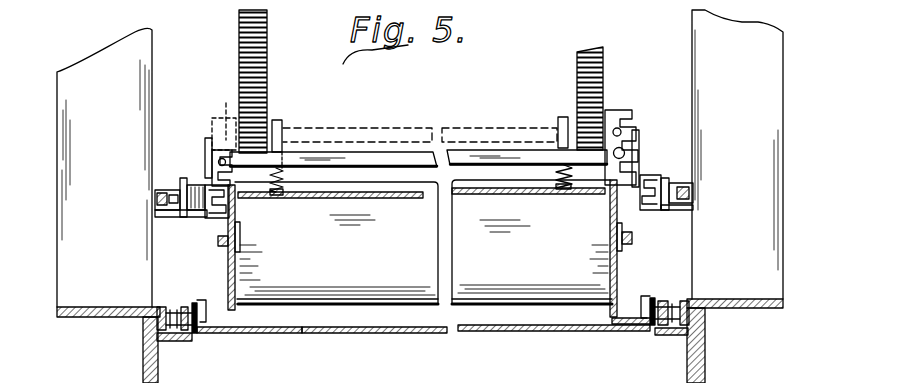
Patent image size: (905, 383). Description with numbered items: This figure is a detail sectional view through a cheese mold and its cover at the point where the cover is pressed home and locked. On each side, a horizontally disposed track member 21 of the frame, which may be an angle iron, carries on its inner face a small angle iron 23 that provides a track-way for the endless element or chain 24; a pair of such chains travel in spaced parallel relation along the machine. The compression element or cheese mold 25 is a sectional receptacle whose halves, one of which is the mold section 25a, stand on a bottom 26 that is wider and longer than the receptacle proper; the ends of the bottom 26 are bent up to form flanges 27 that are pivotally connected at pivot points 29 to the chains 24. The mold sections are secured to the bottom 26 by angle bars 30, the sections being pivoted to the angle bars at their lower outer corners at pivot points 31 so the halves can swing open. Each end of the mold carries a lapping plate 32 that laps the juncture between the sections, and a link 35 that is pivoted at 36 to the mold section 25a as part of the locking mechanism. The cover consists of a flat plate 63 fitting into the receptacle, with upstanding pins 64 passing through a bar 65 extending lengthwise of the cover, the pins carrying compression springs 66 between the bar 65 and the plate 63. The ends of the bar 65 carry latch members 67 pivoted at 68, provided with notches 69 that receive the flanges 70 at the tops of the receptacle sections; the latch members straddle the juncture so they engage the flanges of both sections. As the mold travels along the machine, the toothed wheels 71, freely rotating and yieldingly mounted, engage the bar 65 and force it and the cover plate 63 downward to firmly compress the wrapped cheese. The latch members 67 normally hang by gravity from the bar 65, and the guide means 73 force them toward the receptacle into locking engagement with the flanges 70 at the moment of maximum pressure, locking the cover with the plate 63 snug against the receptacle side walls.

The horizontally disposed track member 21 is at (88, 318).
The small angle iron 23 is at (162, 347).
The endless element or chain 24 is at (180, 296).
The compression element or cheese mold 25 is at (381, 181).
The mold section 25a is at (352, 310).
The bottom 26 is at (474, 329).
The flange 27 is at (199, 300).
The pivot point 29 is at (198, 314).
The angle bar 30 is at (208, 335).
The pivot point 31 is at (234, 299).
The lapping plate 32 is at (228, 262).
The link 35 is at (240, 231).
The pivot 36 is at (216, 239).
The flat plate 63 is at (476, 193).
The upstanding pin 64 is at (281, 119).
The bar 65 is at (345, 152).
The compression spring 66 is at (285, 177).
The latch member 67 is at (201, 162).
The pivot 68 is at (227, 118).
The notch 69 is at (213, 204).
The flange 70 is at (230, 178).
The toothed wheel 71 is at (240, 46).
The guide means 73 is at (181, 184).